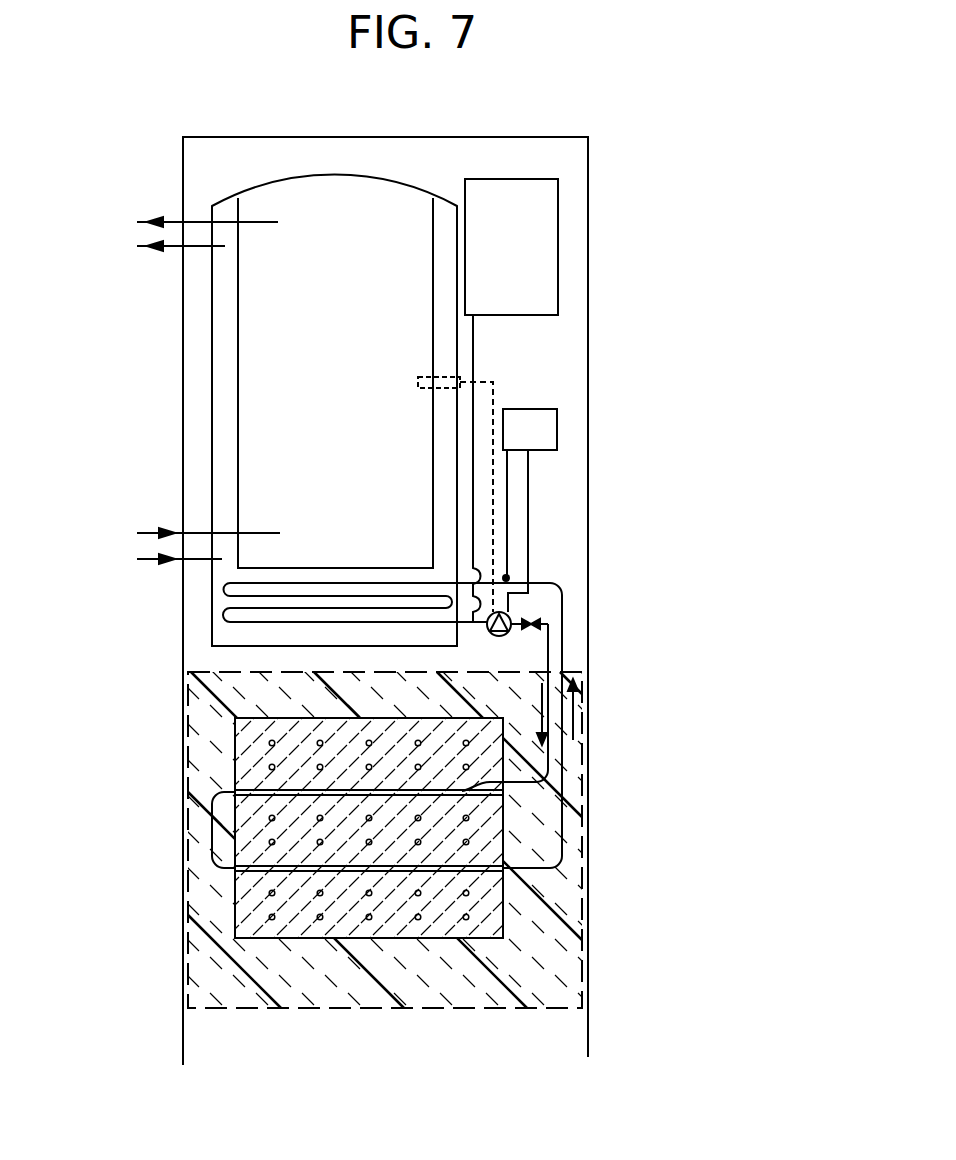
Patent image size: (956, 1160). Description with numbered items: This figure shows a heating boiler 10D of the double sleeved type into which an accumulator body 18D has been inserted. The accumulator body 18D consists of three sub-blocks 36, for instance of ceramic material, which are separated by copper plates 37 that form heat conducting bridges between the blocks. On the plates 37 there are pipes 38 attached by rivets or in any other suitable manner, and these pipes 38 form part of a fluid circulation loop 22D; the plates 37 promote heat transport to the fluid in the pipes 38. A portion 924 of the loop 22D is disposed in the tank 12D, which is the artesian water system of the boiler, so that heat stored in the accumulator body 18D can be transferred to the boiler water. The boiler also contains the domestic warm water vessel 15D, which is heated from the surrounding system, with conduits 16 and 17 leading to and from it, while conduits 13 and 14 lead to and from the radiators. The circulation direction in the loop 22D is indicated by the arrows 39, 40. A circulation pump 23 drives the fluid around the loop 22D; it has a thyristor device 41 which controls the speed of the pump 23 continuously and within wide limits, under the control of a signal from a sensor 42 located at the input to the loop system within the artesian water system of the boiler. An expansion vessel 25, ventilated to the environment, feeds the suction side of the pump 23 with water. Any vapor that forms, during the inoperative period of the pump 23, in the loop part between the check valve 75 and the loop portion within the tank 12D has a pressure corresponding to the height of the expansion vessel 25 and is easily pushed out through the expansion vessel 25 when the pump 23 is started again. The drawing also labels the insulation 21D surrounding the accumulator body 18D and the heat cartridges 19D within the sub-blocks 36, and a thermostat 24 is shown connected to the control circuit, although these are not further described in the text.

The heating boiler 10D is at (592, 257).
The tank 12D is at (206, 430).
The warm water vessel 15D is at (232, 378).
The conduit to radiators 13 is at (175, 250).
The conduit from radiators 14 is at (175, 561).
The conduit to warm water vessel 16 is at (173, 530).
The conduit from warm water vessel 17 is at (175, 219).
The portion of loop 924 is at (222, 583).
The expansion vessel 25 is at (533, 190).
The thermostat 24 is at (465, 350).
The thyristor device 41 is at (548, 423).
The sensor 42 is at (508, 576).
The circulation pump 23 is at (520, 608).
The check valve 75 is at (548, 624).
The fluid circulation loop 22D is at (572, 655).
The arrow 40 is at (578, 700).
The arrow 39 is at (567, 752).
The pipes 38 is at (460, 868).
The sub-blocks 36 is at (243, 808).
The copper plates 37 is at (262, 882).
The insulation 21D is at (565, 913).
The accumulator body 18D is at (296, 946).
The heat cartridges 19D is at (464, 921).